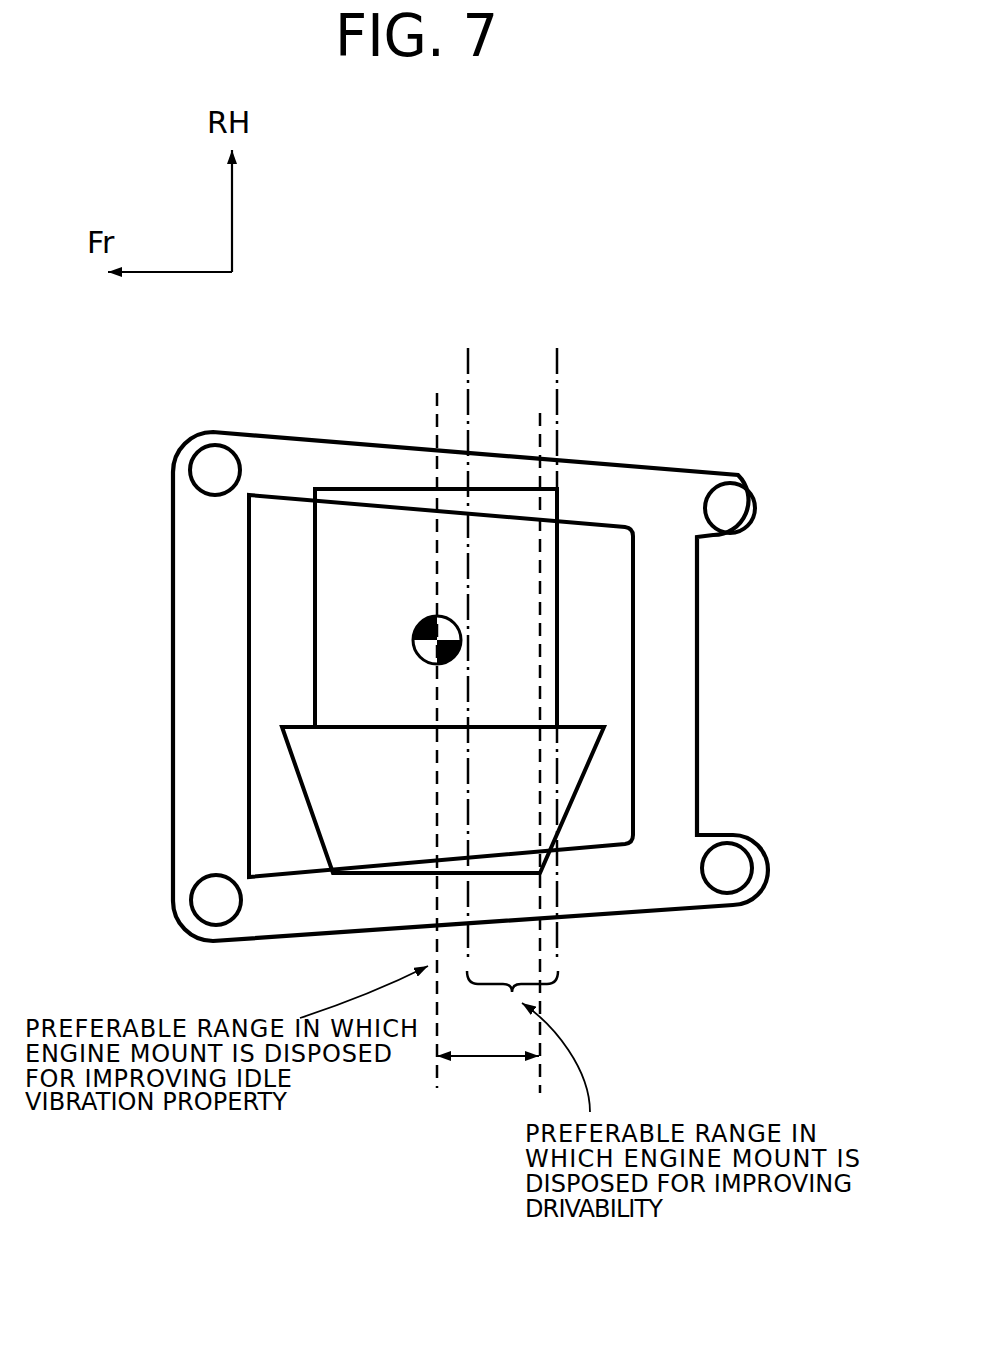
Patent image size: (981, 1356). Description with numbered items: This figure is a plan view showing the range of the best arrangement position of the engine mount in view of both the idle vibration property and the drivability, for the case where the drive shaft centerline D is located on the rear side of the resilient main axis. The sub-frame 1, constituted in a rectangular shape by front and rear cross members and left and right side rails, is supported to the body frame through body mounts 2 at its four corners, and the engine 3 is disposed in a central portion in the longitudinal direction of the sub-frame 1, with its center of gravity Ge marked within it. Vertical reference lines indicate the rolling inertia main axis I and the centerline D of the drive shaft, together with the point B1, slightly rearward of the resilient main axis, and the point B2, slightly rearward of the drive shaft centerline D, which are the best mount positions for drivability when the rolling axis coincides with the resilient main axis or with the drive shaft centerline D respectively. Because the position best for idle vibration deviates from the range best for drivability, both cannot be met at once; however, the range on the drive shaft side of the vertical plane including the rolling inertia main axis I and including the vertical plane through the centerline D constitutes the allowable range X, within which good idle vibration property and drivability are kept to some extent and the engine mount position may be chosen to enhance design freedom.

The sub-frame 1 is at (697, 663).
The body mounts 2 is at (213, 467).
The engine 3 is at (313, 686).
The center of gravity of the engine Ge is at (404, 626).
The rolling inertia main axis I is at (425, 413).
The centerline of the drive shaft D is at (552, 432).
The point B1 is at (470, 633).
The point B2 is at (555, 633).
The allowable range X is at (488, 1038).